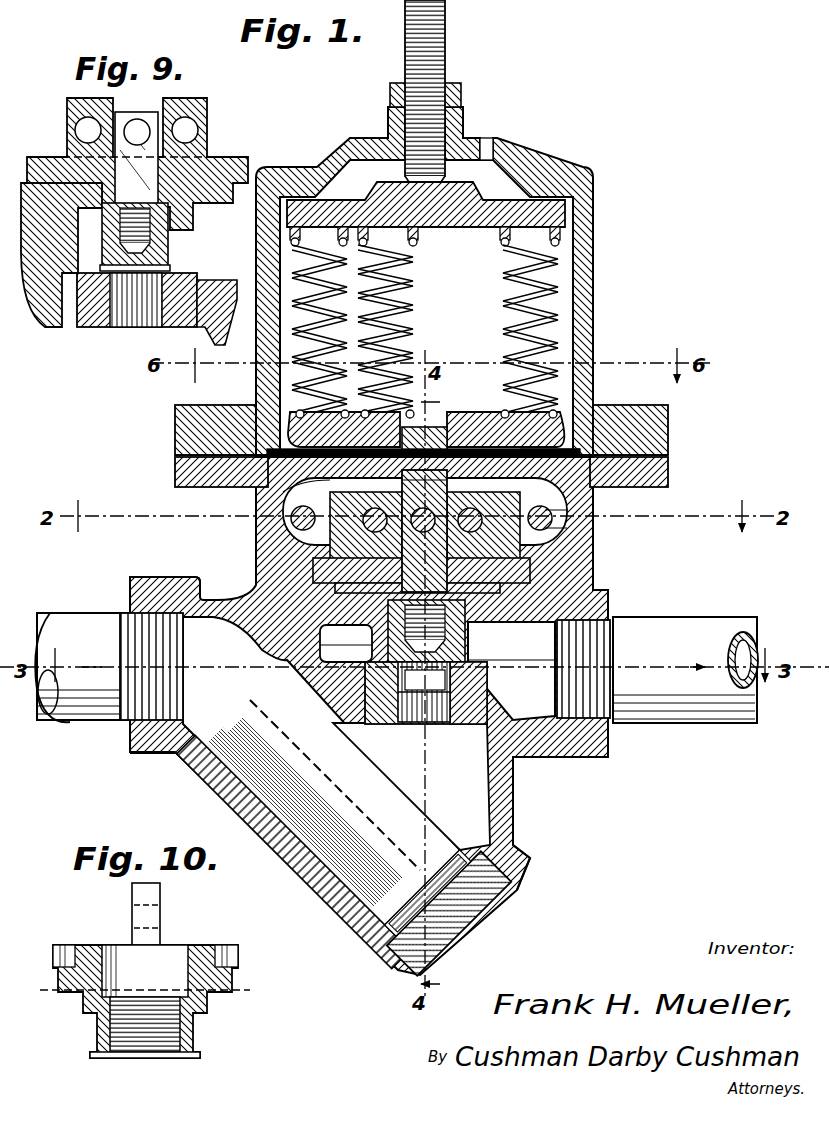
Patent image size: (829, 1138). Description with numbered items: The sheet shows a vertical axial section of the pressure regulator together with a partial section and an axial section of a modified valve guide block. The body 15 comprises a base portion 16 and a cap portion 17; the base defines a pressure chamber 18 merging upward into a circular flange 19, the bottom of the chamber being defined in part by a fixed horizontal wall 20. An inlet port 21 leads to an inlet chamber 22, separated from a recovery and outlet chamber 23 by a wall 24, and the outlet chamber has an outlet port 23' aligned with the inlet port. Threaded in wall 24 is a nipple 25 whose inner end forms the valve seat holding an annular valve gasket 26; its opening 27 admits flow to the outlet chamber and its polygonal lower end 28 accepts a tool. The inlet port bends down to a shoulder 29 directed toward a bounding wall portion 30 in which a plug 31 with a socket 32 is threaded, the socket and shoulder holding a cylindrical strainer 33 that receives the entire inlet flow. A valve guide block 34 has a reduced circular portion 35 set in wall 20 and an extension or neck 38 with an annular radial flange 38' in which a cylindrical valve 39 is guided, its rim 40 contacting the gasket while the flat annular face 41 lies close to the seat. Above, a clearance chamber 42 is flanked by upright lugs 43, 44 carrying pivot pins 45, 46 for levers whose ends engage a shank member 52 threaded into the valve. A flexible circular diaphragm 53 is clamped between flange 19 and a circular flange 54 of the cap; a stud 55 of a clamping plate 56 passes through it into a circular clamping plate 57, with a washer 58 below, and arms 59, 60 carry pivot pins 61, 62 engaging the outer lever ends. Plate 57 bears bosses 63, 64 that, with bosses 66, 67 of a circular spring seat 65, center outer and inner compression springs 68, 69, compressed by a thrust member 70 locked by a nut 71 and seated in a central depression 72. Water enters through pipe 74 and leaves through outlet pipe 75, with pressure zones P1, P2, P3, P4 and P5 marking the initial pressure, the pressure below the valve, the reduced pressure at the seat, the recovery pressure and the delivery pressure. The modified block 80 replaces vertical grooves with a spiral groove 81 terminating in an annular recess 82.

In FIG. 1, the body of the regulator 15 is at (600, 352).
In FIG. 1, the base portion 16 is at (590, 548).
In FIG. 1, the cap portion 17 is at (594, 270).
In FIG. 1, the pressure chamber 18 is at (575, 500).
In FIG. 1, the circular flange 19 is at (660, 473).
In FIG. 1, the fixed horizontal wall 20 is at (495, 620).
In FIG. 1, the inlet port 21 is at (198, 592).
In FIG. 1, the inlet chamber 22 is at (490, 790).
In FIG. 1, the recovery and outlet chamber 23 is at (521, 792).
In FIG. 1, the outlet port 23' is at (638, 670).
In FIG. 1, the wall 24 is at (362, 722).
In FIG. 9, the wall 24 is at (55, 300).
In FIG. 1, the nipple 25 is at (462, 724).
In FIG. 9, the nipple 25 is at (105, 327).
In FIG. 1, the annular valve gasket 26 is at (470, 670).
In FIG. 1, the opening of the nipple 27 is at (410, 725).
In FIG. 1, the lower end of the passage 28 is at (435, 725).
In FIG. 1, the shoulder 29 is at (160, 750).
In FIG. 1, the bounding wall portion 30 is at (480, 800).
In FIG. 1, the plug 31 is at (512, 866).
In FIG. 1, the socket 32 is at (480, 878).
In FIG. 1, the cylindrical strainer 33 is at (370, 915).
In FIG. 1, the valve guide block 34 is at (594, 576).
In FIG. 1, the reduced circular portion 35 is at (328, 634).
In FIG. 1, the extension of block 38 is at (511, 644).
In FIG. 1, the annular radial flange 38' is at (345, 656).
In FIG. 1, the cylindrical valve 39 is at (445, 640).
In FIG. 9, the cylindrical valve 39 is at (170, 250).
In FIG. 1, the circular edge or rim 40 is at (425, 684).
In FIG. 1, the flat annular face 41 is at (357, 671).
In FIG. 1, the clearance chamber 42 is at (330, 565).
In FIG. 1, the upright lug 43 is at (410, 483).
In FIG. 1, the upright lug 44 is at (448, 500).
In FIG. 1, the pivot pin 45 is at (340, 540).
In FIG. 1, the pivot pin 46 is at (520, 540).
In FIG. 1, the shank member 52 is at (336, 584).
In FIG. 1, the flexible circular diaphragm 53 is at (580, 416).
In FIG. 1, the circular flange 54 is at (648, 415).
In FIG. 1, the stud 55 is at (432, 436).
In FIG. 1, the clamping plate 56 is at (325, 462).
In FIG. 1, the circular clamping plate 57 is at (483, 428).
In FIG. 1, the washer 58 is at (520, 462).
In FIG. 1, the arm or lug 59 is at (285, 492).
In FIG. 1, the arm or lug 60 is at (598, 508).
In FIG. 1, the pivot pin 61 is at (300, 520).
In FIG. 1, the pivot pin 62 is at (597, 526).
In FIG. 1, the spring centering bosses 63 is at (300, 394).
In FIG. 1, the inner series of bosses 64 is at (390, 418).
In FIG. 1, the circular spring seat 65 is at (485, 197).
In FIG. 1, the bosses 66 is at (315, 228).
In FIG. 1, the bosses 67 is at (415, 237).
In FIG. 1, the outer series of compression springs 68 is at (565, 302).
In FIG. 1, the inner series of compression springs 69 is at (410, 303).
In FIG. 1, the thrust member 70 is at (452, 60).
In FIG. 1, the nut 71 is at (462, 97).
In FIG. 1, the central depression 72 is at (450, 170).
In FIG. 1, the pipe 74 is at (74, 706).
In FIG. 1, the outlet pipe 75 is at (670, 624).
In FIG. 9, the valve guide block 80 is at (215, 150).
In FIG. 10, the valve guide block 80 is at (190, 943).
In FIG. 9, the spiral groove 81 is at (102, 240).
In FIG. 10, the spiral groove 81 is at (180, 1040).
In FIG. 9, the annular recess 82 is at (100, 268).
In FIG. 10, the annular recess 82 is at (128, 1060).
In FIG. 1, the initial pressure P1 is at (185, 625).
In FIG. 1, the inlet pressure below the valve P2 is at (411, 786).
In FIG. 1, the reduced pressure P3 is at (480, 670).
In FIG. 1, the recovery pressure P4 is at (290, 630).
In FIG. 1, the delivery pressure P5 is at (535, 722).